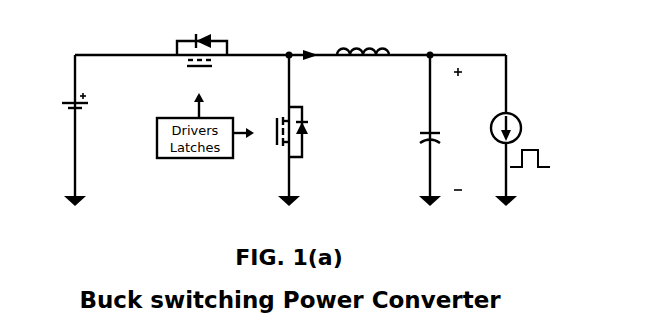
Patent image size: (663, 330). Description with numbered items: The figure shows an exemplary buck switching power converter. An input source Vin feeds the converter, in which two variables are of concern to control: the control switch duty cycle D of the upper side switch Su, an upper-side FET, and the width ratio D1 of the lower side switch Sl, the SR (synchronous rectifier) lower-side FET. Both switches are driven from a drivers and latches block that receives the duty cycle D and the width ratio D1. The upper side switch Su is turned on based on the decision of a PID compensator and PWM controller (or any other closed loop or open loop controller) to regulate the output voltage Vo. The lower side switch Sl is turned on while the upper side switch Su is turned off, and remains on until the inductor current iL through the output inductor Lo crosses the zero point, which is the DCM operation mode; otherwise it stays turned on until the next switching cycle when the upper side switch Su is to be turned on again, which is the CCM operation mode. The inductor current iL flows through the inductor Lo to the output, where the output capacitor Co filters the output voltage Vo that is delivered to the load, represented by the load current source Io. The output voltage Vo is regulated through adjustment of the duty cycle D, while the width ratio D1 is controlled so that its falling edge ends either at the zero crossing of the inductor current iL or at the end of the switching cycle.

The input voltage source Vin is at (60, 102).
The upper side switch Su is at (202, 41).
The lower side switch Sl is at (305, 132).
The duty cycle D is at (193, 97).
The SR switch width ratio D1 is at (249, 121).
The inductor current iL is at (310, 44).
The output inductor Lo is at (363, 41).
The output capacitor Co is at (412, 134).
The output voltage Vo is at (454, 129).
The load current source Io is at (520, 140).